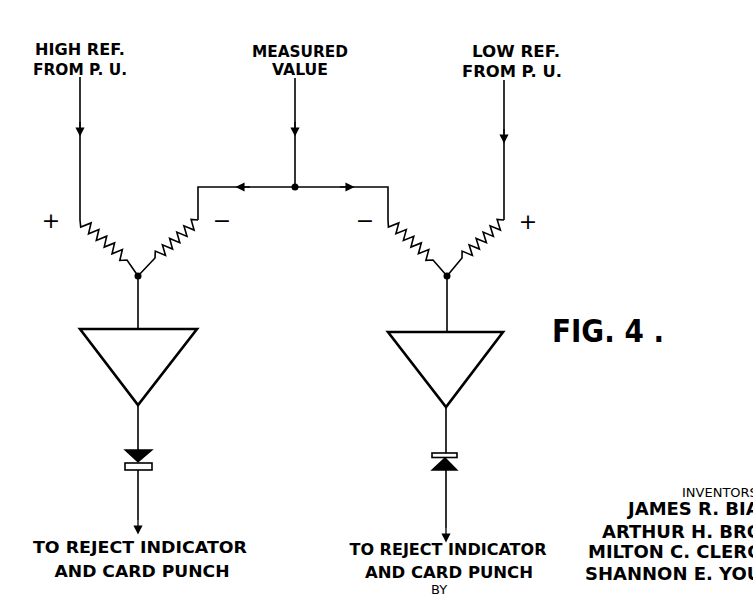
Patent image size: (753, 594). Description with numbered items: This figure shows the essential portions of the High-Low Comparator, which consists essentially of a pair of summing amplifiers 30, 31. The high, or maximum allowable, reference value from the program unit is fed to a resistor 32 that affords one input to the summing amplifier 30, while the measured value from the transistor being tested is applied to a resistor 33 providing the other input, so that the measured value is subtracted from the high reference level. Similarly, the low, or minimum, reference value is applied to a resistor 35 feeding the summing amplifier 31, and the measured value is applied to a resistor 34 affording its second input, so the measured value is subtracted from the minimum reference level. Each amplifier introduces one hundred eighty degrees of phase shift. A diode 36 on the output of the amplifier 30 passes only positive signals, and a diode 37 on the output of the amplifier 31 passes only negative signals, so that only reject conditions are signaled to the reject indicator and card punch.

The summing amplifier 30 is at (128, 365).
The summing amplifier 31 is at (437, 367).
The resistor 32 is at (108, 253).
The resistor 33 is at (177, 248).
The resistor 34 is at (412, 250).
The resistor 35 is at (487, 248).
The diode 36 is at (152, 458).
The diode 37 is at (457, 463).